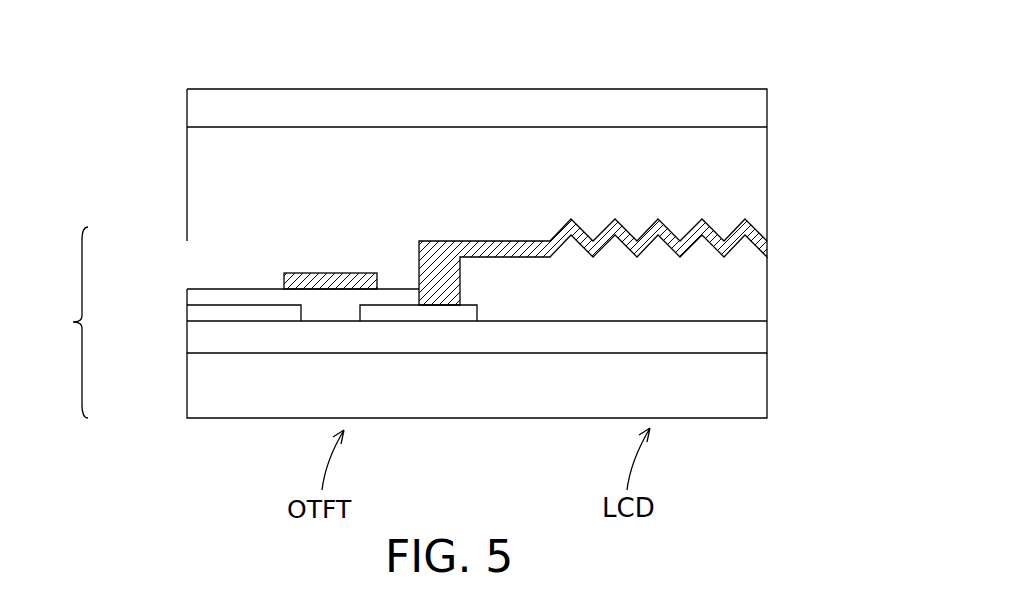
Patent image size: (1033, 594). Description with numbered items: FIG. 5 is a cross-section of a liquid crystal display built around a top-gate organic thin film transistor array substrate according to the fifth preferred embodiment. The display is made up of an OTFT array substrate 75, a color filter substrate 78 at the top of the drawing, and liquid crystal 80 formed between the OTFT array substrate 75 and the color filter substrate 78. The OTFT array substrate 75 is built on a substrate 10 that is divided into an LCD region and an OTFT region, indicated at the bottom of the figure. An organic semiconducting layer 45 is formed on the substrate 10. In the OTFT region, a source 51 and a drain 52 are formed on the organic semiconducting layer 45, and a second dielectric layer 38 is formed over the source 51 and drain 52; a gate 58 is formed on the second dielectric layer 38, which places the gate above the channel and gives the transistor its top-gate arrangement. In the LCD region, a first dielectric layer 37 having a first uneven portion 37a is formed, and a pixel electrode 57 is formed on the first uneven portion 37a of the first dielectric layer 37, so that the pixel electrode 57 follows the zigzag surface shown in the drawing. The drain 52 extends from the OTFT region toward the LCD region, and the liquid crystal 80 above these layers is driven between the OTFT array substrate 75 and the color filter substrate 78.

The substrate 10 is at (757, 375).
The organic semiconducting layer 45 is at (757, 333).
The first dielectric layer 37 is at (757, 292).
The first uneven portion 37a is at (678, 255).
The source 51 is at (200, 312).
The second dielectric layer 38 is at (200, 294).
The gate 58 is at (283, 282).
The drain 52 is at (403, 312).
The pixel electrode 57 is at (598, 252).
The OTFT array substrate 75 is at (63, 322).
The liquid crystal 80 is at (757, 146).
The color filter substrate 78 is at (757, 110).